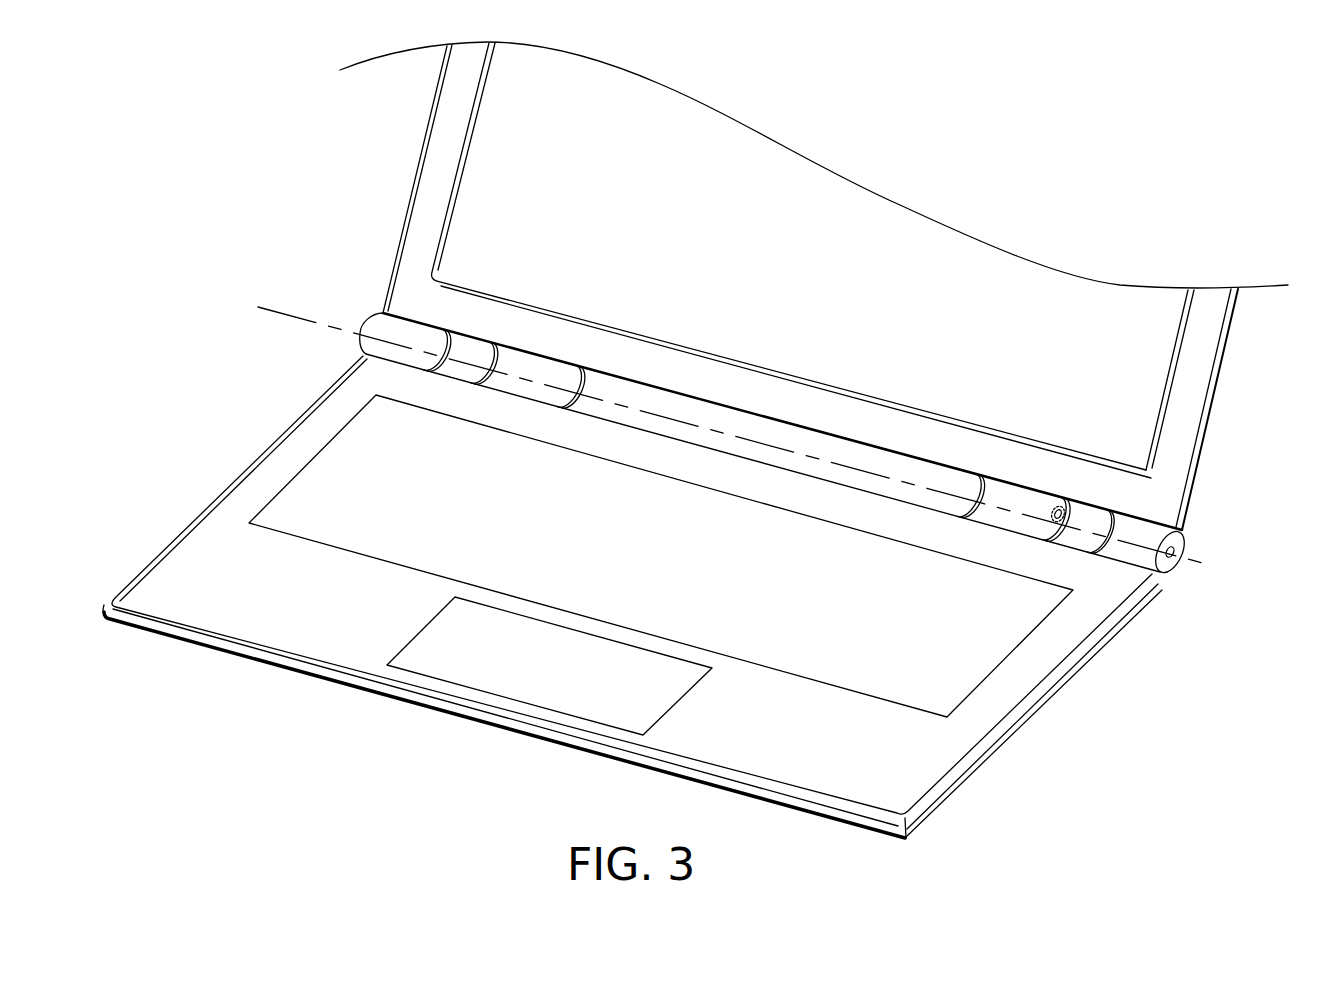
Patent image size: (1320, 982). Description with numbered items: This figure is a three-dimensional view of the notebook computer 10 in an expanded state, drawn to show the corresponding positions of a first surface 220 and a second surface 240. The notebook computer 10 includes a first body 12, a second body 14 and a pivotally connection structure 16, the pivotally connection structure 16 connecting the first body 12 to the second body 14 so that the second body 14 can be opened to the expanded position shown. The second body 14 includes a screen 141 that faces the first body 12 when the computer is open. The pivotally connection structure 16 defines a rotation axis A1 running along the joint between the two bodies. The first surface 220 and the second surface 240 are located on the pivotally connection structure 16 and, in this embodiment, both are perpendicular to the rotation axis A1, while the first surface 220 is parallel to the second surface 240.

The notebook computer 10 is at (1113, 190).
The first body 12 is at (1023, 673).
The second body 14 is at (1212, 385).
The screen 141 is at (1155, 342).
The pivotally connection structure 16 is at (1175, 557).
The first surface 220 is at (1107, 523).
The second surface 240 is at (1063, 510).
The rotation axis A1 is at (278, 312).